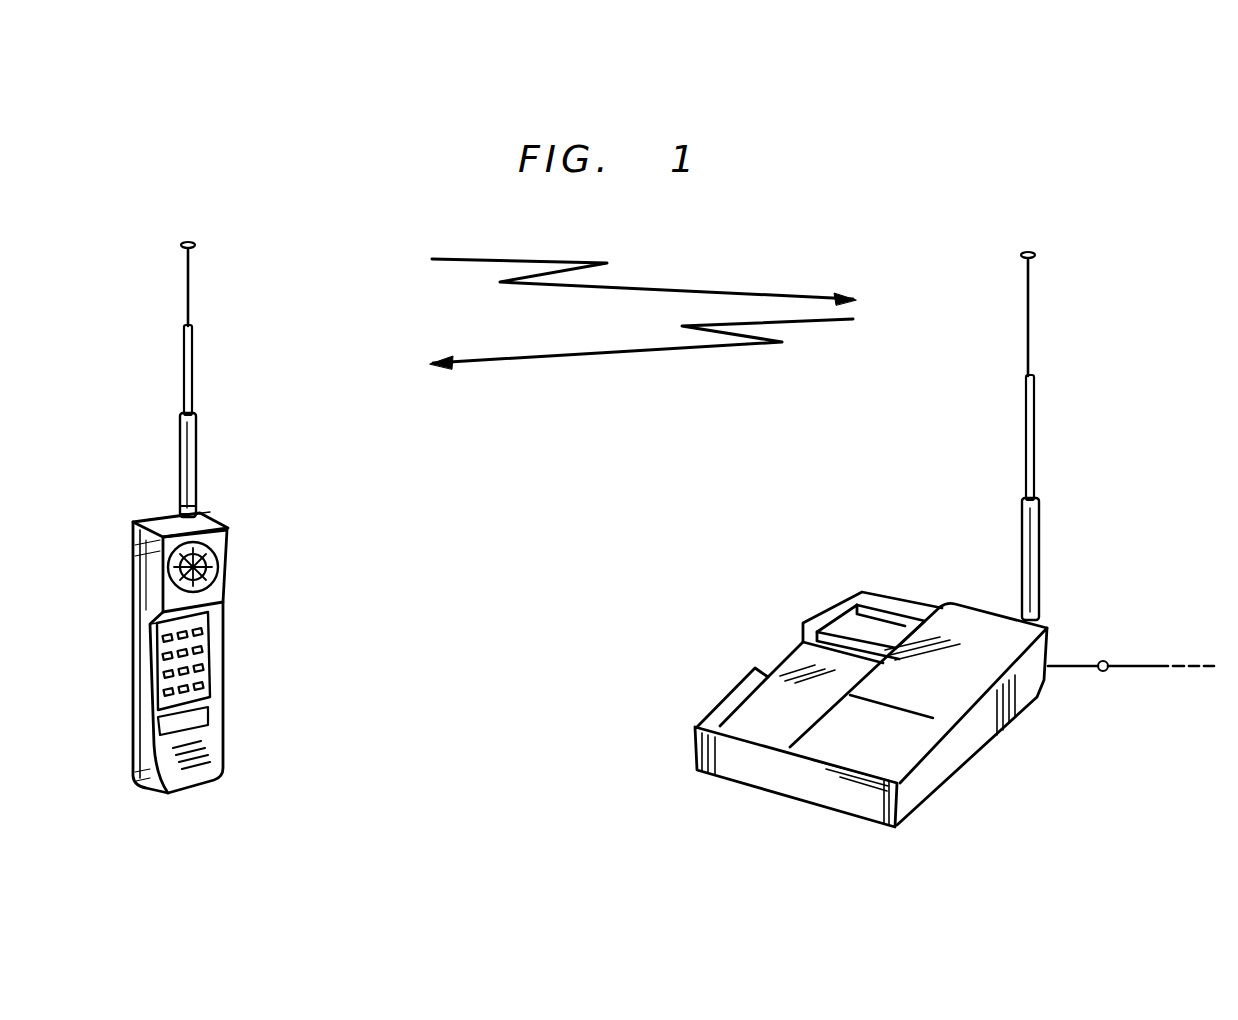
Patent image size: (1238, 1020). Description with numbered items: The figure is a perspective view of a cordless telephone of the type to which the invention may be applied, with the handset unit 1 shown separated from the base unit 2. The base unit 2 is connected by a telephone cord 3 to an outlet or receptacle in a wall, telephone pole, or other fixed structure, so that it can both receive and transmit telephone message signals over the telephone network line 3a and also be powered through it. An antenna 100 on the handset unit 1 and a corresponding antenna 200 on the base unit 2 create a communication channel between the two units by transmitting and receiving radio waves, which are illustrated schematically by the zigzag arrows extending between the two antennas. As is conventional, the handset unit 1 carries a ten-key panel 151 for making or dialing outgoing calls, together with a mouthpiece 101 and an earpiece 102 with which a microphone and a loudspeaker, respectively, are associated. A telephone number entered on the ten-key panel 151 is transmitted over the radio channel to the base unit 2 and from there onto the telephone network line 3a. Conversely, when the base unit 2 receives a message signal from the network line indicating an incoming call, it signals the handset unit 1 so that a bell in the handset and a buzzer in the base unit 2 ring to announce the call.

The handset unit 1 is at (197, 787).
The antenna 100 is at (197, 432).
The earpiece 102 is at (218, 563).
The ten-key panel 151 is at (211, 652).
The mouthpiece 101 is at (205, 745).
The base unit 2 is at (980, 760).
The antenna 200 is at (1041, 518).
The telephone cord 3 is at (1080, 670).
The telephone network line 3a is at (1153, 670).